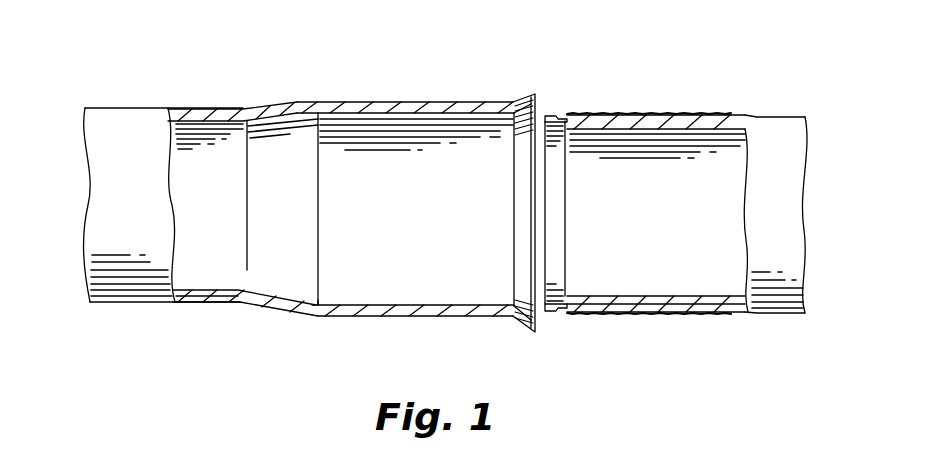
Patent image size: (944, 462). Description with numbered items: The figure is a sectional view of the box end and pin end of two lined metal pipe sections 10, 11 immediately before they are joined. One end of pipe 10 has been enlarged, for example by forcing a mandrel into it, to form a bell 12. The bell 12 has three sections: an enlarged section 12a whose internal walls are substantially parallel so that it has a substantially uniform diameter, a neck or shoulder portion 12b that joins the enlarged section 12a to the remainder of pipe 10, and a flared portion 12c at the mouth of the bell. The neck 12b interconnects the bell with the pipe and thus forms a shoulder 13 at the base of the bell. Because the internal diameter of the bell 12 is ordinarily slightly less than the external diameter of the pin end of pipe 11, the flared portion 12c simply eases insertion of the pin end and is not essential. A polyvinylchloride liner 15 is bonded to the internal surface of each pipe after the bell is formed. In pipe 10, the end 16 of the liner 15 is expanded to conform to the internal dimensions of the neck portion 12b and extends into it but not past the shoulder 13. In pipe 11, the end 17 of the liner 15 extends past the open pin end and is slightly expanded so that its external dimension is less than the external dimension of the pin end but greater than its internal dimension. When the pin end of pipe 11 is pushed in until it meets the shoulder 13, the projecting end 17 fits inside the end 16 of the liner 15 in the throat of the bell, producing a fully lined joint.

The pipe section 10 is at (140, 108).
The pipe section 11 is at (689, 163).
The bell 12 is at (351, 196).
The enlarged section 12a is at (373, 100).
The neck or shoulder portion 12b is at (273, 106).
The flared portion 12c is at (523, 97).
The shoulder 13 is at (320, 304).
The PVC liner 15 is at (235, 294).
The liner end 16 is at (320, 240).
The liner end 17 is at (550, 117).